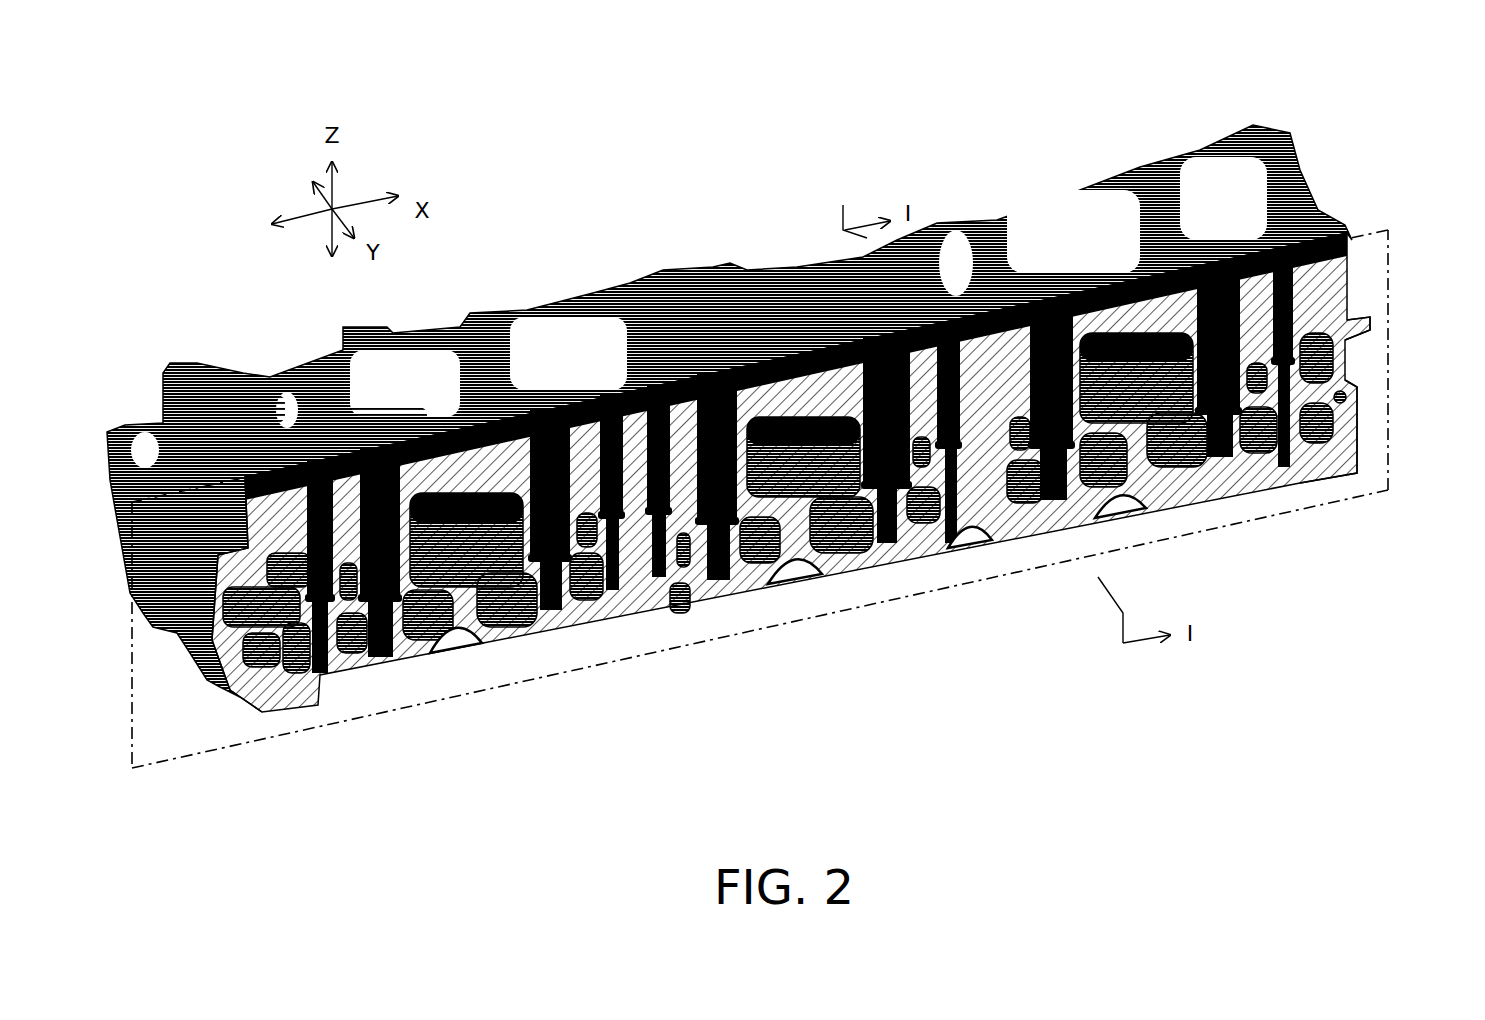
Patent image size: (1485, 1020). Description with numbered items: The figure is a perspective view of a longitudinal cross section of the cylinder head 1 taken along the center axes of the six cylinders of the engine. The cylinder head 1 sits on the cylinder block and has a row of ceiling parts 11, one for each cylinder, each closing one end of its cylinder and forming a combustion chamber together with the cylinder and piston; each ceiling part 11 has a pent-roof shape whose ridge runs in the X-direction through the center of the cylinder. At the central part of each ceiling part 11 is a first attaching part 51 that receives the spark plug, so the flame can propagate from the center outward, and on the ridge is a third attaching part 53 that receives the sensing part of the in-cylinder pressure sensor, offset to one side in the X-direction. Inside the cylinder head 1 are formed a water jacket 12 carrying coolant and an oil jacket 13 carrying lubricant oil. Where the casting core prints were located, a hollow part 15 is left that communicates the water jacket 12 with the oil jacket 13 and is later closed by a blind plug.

The cylinder head 1 is at (1270, 123).
The ceiling part 11 is at (430, 650).
The water jacket 12 is at (1365, 433).
The oil jacket 13 is at (1352, 357).
The hollow part 15 is at (497, 630).
The first attaching part 51 is at (380, 657).
The third attaching part 53 is at (320, 680).